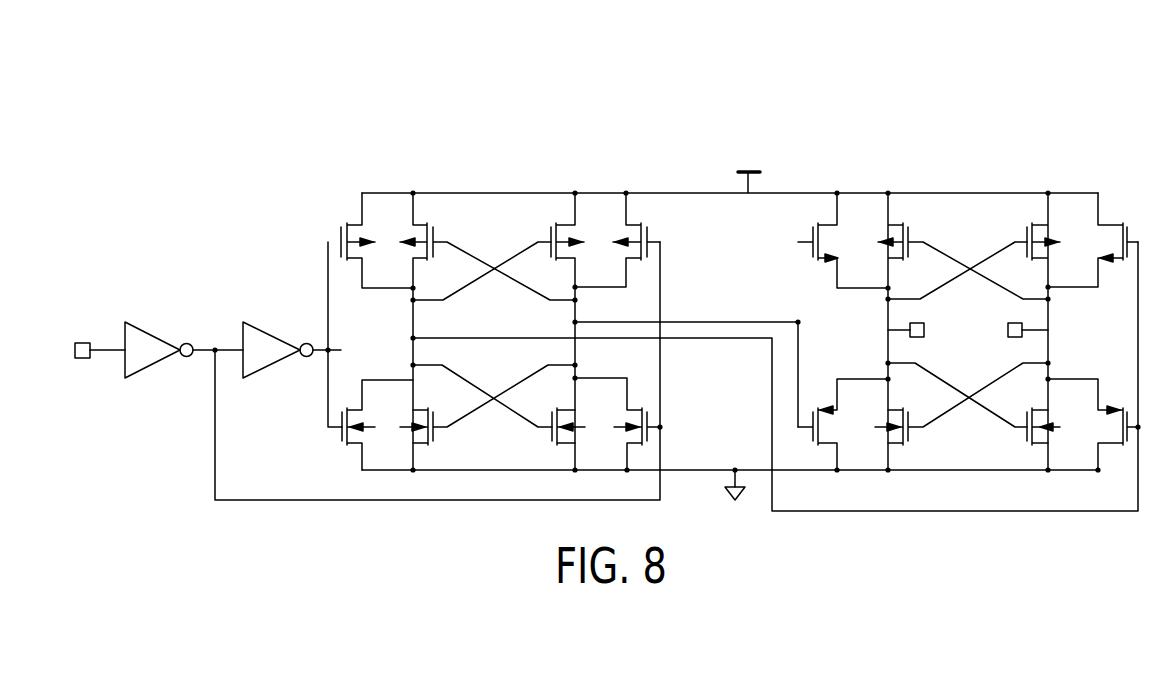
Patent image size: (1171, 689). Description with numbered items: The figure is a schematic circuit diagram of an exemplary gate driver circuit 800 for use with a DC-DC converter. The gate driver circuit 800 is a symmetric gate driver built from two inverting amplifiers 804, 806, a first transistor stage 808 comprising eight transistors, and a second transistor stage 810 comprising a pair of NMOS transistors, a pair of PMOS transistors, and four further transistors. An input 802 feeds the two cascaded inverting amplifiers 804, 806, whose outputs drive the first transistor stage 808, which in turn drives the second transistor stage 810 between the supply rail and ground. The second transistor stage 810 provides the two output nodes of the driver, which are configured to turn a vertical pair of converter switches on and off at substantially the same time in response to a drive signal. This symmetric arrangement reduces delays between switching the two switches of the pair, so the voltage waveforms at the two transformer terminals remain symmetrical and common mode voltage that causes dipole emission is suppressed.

The gate driver circuit 800 is at (712, 90).
The input terminal 802 is at (82, 361).
The inverting amplifier 804 is at (160, 362).
The inverting amplifier 806 is at (282, 362).
The first transistor stage 808 is at (655, 170).
The second transistor stage 810 is at (1157, 168).